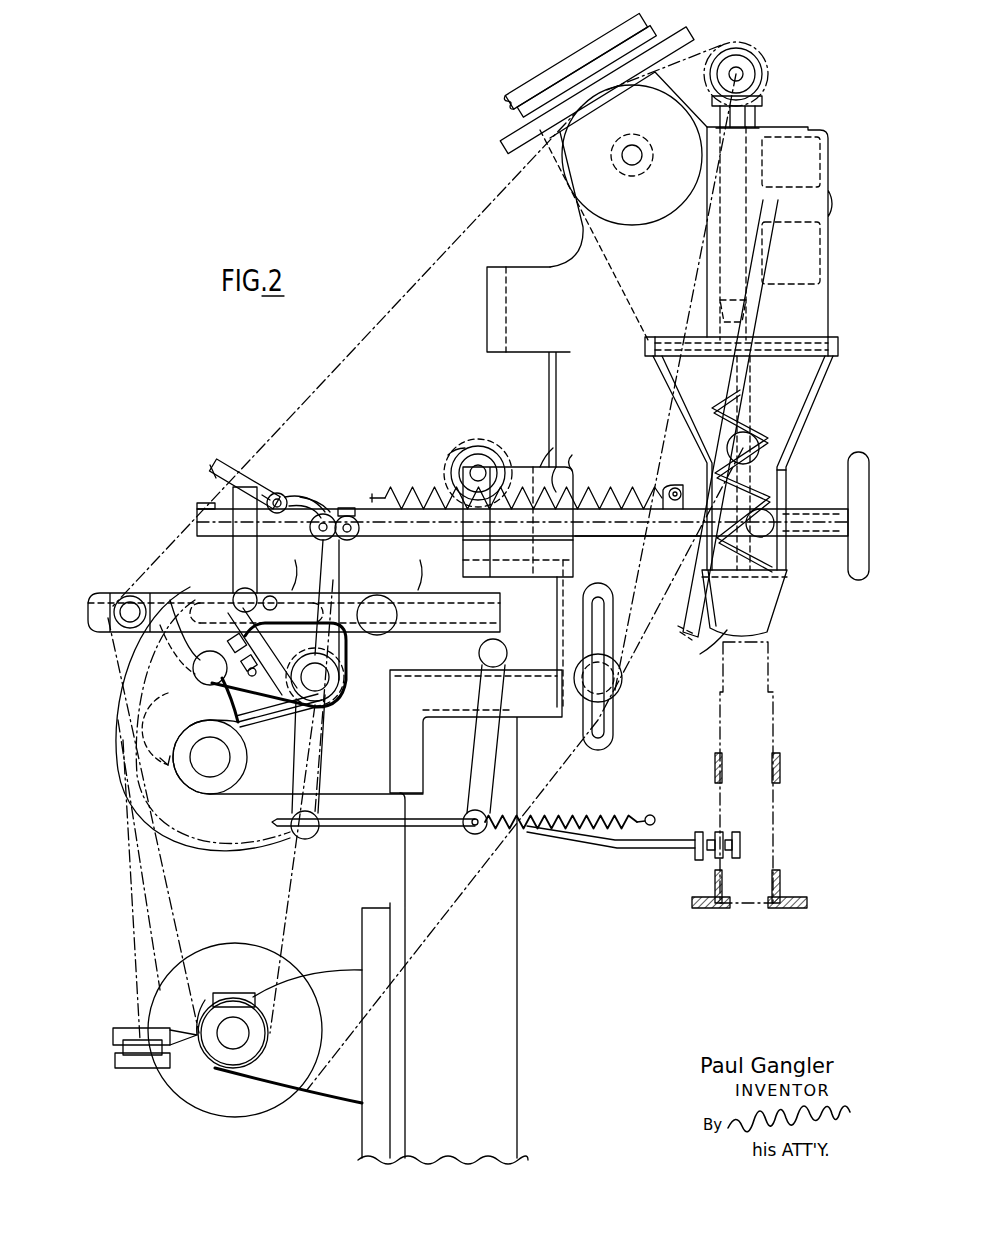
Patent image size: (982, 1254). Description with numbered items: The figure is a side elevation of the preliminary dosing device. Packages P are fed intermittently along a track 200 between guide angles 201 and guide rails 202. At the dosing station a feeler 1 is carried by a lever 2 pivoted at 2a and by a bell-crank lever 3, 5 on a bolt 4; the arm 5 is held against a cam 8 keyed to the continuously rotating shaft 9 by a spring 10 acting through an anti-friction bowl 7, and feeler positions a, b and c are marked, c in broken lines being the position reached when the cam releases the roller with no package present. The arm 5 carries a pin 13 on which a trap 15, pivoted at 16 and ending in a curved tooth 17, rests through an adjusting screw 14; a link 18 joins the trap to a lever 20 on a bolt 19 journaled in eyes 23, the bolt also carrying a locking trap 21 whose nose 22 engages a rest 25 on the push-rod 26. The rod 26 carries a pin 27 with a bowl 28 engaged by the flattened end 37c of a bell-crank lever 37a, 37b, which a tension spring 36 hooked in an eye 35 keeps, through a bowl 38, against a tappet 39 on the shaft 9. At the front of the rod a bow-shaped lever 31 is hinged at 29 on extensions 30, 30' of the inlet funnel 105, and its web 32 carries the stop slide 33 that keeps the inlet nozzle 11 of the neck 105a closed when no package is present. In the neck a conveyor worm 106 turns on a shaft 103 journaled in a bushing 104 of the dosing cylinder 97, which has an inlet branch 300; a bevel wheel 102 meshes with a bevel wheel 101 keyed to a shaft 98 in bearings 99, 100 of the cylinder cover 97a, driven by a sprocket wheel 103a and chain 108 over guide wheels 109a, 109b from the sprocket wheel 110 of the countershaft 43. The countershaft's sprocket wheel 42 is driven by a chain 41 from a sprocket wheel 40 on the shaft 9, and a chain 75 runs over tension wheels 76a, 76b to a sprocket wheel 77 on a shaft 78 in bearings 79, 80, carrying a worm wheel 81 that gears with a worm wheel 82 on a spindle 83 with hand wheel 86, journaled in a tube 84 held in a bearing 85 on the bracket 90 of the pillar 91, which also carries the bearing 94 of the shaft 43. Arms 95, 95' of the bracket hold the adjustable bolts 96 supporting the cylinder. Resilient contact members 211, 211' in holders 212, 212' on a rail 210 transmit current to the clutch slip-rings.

The feeler 1 is at (614, 846).
The lever 2 is at (468, 766).
The pivot 2a is at (478, 652).
The bell-crank lever 3 is at (318, 770).
The bolt 4 is at (344, 678).
The arm 5 is at (280, 714).
The anti-friction bowl 7 is at (200, 675).
The cam 8 is at (236, 712).
The shaft 9 is at (298, 757).
The spring 10 is at (612, 816).
The inlet nozzle 11 is at (778, 612).
The carrier pin 13 is at (257, 668).
The adjusting screw 14 is at (245, 644).
The trap 15 is at (236, 592).
The pivot 16 is at (398, 612).
The curved tooth 17 is at (170, 729).
The link 18 is at (233, 553).
The bolt 19 is at (283, 494).
The lever 20 is at (268, 490).
The locking trap 21 is at (222, 464).
The nose 22 is at (212, 478).
The eyes 23 is at (312, 492).
The rest 25 is at (200, 508).
The push-rod 26 is at (205, 536).
The pin 27 is at (340, 538).
The bowl 28 is at (350, 508).
The hinge link 29 is at (772, 535).
The extension 30 is at (758, 432).
The extension 30' is at (748, 475).
The bow-shaped lever 31 is at (697, 566).
The web 32 is at (685, 640).
The stop slide 33 is at (704, 645).
The eye 35 is at (698, 470).
The tension spring 36 is at (648, 480).
The bell-crank lever arm 37a is at (342, 578).
The bell-crank lever arm 37b is at (279, 655).
The flattened end 37c is at (332, 505).
The bowl 38 is at (198, 642).
The tappet 39 is at (224, 690).
The sprocket wheel 40 is at (218, 848).
The chain 41 is at (160, 910).
The sprocket wheel 42 is at (268, 1020).
The countershaft 43 is at (228, 1046).
The chain 75 is at (298, 565).
The tension wheel 76a is at (272, 595).
The tension wheel 76b is at (342, 668).
The sprocket wheel 77 is at (474, 440).
The shaft 78 is at (462, 445).
The bearing 79 is at (488, 456).
The bearing 80 is at (487, 466).
The worm wheel 81 is at (450, 466).
The worm wheel 82 is at (476, 520).
The spindle 83 is at (490, 548).
The tube 84 is at (615, 538).
The bearing 85 is at (548, 448).
The hand wheel 86 is at (852, 572).
The bracket 90 is at (557, 640).
The pillar 91 is at (517, 920).
The bearing 94 is at (276, 1078).
The arm 95 is at (575, 473).
The arm 95' is at (588, 454).
The bolt 96 is at (553, 383).
The dosing cylinder 97 is at (822, 314).
The cylinder cover 97a is at (762, 140).
The shaft 98 is at (745, 72).
The bearing 99 is at (762, 40).
The bearing 100 is at (768, 44).
The bevel wheel 101 is at (765, 100).
The bevel wheel 102 is at (762, 118).
The shaft 103 is at (745, 252).
The sprocket wheel 103a is at (768, 74).
The bushing 104 is at (752, 278).
The inlet funnel 105 is at (814, 402).
The neck 105a is at (785, 502).
The conveyor worm 106 is at (785, 482).
The chain 108 is at (400, 322).
The guide wheel 109a is at (125, 592).
The guide wheel 109b is at (614, 678).
The sprocket wheel 110 is at (215, 943).
The track 200 is at (728, 908).
The guide angles 201 is at (715, 882).
The guide rails 202 is at (715, 768).
The rail 210 is at (138, 1068).
The resilient contact member 211 is at (220, 982).
The resilient contact member 211' is at (203, 1005).
The holder 212 is at (145, 1013).
The holder 212' is at (129, 1027).
The inlet branch 300 is at (575, 218).
The feeler position a is at (699, 833).
The contact b is at (715, 831).
The feeler position c is at (732, 832).
The package P is at (770, 718).